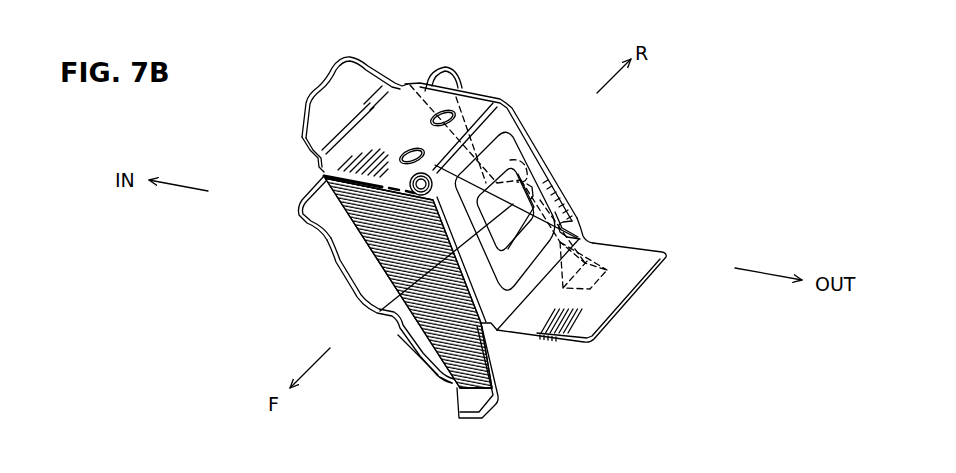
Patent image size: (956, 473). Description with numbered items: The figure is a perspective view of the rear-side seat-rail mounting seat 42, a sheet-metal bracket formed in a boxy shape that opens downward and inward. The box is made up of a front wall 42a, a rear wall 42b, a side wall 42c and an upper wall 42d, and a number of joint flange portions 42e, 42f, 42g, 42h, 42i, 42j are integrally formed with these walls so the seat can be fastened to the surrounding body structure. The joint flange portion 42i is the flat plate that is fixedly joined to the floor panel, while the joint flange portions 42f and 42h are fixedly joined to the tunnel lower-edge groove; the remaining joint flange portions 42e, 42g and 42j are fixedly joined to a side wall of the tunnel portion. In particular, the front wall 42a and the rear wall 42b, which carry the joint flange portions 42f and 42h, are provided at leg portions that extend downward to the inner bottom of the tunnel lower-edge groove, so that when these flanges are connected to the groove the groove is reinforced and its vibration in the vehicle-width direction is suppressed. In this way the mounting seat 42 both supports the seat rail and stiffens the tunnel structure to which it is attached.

The rear-side mounting seat 42 is at (578, 181).
The front wall 42a is at (347, 267).
The rear wall 42b is at (404, 334).
The side wall 42c is at (574, 217).
The upper wall 42d is at (404, 128).
The joint flange portion 42e is at (335, 230).
The joint flange portion 42f is at (470, 402).
The joint flange portion 42g is at (455, 76).
The joint flange portion 42h is at (603, 247).
The joint flange portion 42i is at (611, 308).
The joint flange portion 42j is at (312, 104).